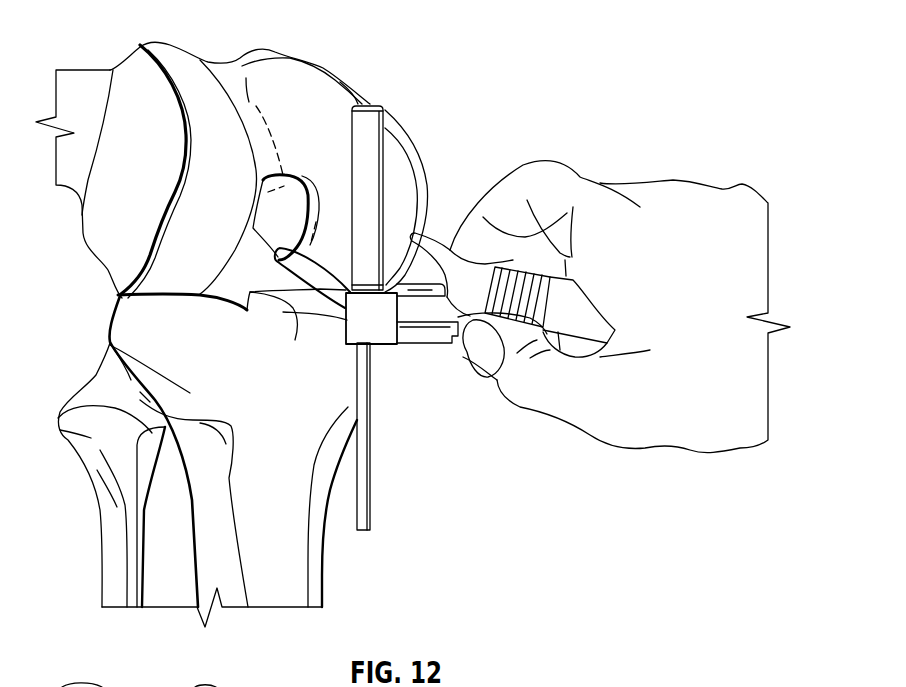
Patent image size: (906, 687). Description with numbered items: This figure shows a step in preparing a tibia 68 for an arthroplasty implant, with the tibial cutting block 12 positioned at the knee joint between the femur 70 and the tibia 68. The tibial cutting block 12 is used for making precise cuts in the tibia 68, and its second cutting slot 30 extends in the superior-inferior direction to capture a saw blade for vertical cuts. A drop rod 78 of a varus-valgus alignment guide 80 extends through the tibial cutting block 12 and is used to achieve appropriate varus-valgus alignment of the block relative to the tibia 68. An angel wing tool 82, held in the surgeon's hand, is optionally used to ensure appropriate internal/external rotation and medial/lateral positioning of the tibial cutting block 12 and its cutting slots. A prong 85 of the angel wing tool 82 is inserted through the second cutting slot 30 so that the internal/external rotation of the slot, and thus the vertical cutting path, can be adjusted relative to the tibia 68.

The tibial cutting block 12 is at (374, 332).
The second cutting slot 30 is at (400, 328).
The tibia 68 is at (112, 345).
The femur 70 is at (250, 95).
The drop rod 78 is at (367, 457).
The varus-valgus alignment guide 80 is at (385, 172).
The angel wing tool 82 is at (507, 297).
The prong 85 is at (437, 307).